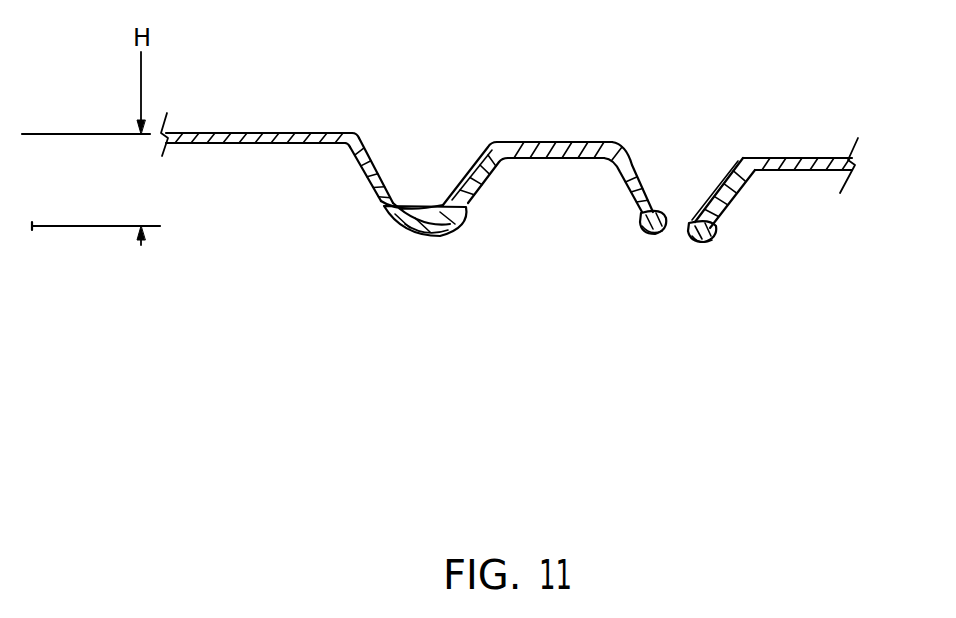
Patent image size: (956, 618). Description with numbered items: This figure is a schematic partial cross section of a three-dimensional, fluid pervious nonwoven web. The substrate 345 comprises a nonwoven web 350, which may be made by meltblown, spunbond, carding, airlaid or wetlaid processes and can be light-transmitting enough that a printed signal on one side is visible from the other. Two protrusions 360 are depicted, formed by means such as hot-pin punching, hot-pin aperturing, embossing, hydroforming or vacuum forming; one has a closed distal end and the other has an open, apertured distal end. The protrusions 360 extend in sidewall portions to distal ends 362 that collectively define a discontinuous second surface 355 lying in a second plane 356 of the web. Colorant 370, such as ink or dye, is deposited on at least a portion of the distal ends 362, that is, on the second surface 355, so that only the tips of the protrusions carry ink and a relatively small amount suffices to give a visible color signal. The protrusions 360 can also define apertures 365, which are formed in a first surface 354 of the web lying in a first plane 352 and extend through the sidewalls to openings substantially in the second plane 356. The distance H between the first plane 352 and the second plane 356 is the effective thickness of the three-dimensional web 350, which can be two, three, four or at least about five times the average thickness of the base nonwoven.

The substrate 345 is at (800, 153).
The nonwoven web 350 is at (240, 134).
The first plane 352 is at (75, 134).
The first surface 354 is at (324, 133).
The second surface 355 is at (440, 248).
The second plane 356 is at (90, 228).
The protrusions 360 is at (375, 180).
The distal ends 362 is at (470, 221).
The apertures 365 is at (683, 158).
The colorant 370 is at (427, 234).